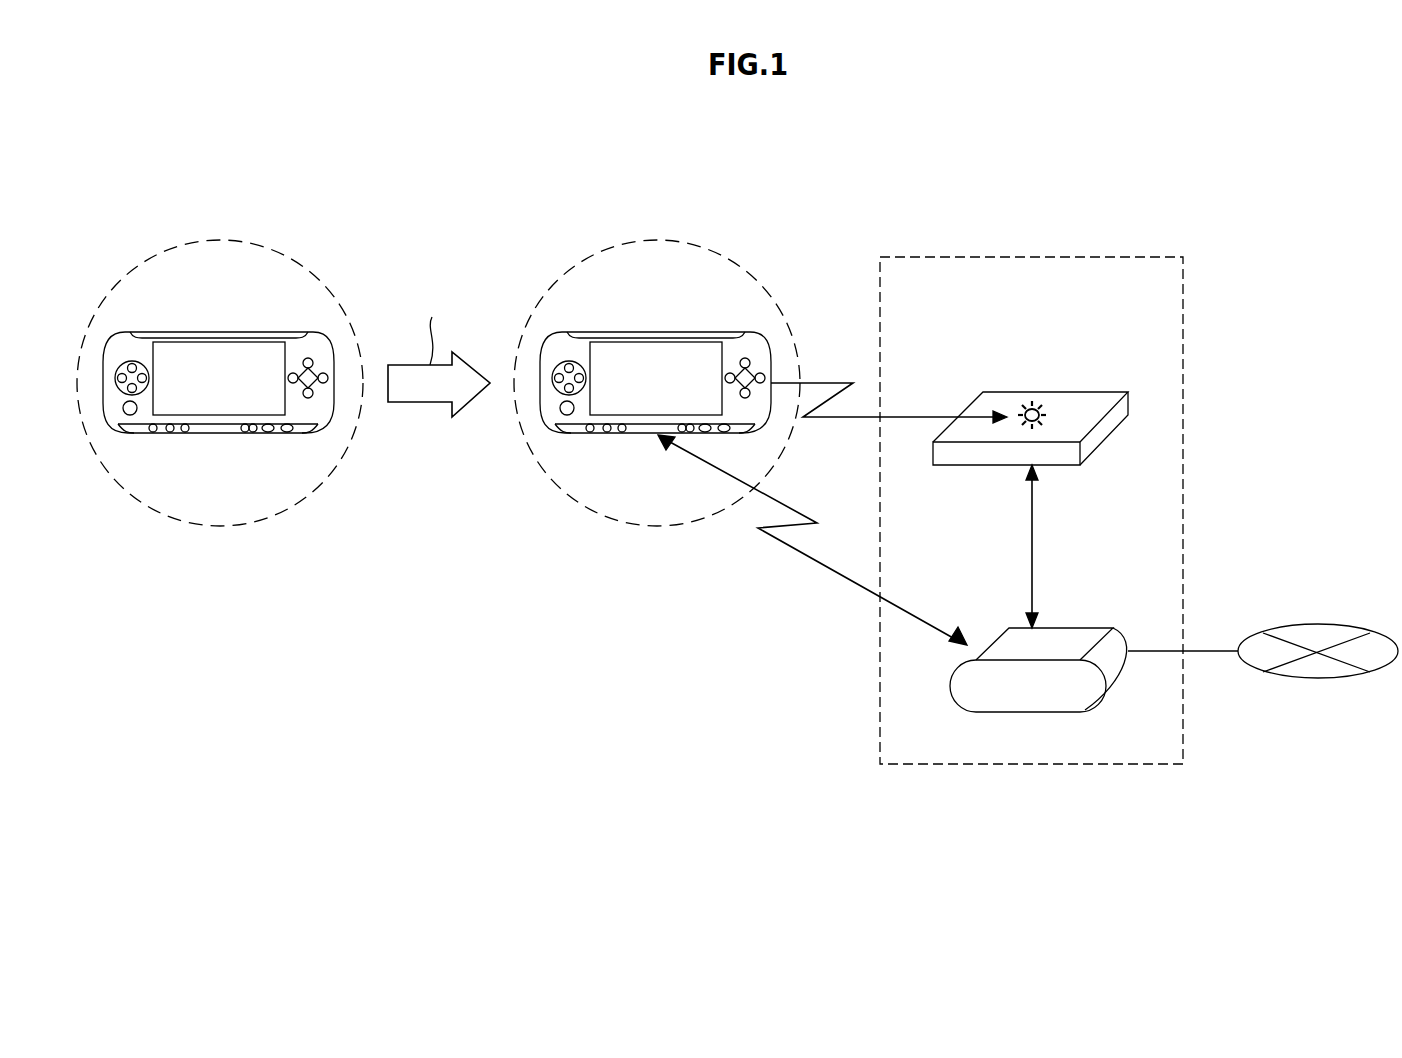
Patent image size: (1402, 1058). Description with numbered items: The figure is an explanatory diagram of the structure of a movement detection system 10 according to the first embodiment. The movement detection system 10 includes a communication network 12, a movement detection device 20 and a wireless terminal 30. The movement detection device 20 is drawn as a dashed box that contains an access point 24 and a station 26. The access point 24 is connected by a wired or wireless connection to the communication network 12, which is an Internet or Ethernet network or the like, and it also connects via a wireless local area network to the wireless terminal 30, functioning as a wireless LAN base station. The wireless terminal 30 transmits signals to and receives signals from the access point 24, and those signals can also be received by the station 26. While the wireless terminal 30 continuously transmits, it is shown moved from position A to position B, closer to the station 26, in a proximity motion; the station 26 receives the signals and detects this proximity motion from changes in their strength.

The movement detection system 10 is at (290, 769).
The communication network 12 is at (1318, 678).
The movement detection device 20 is at (1033, 764).
The access point 24 is at (1078, 628).
The station 26 is at (1078, 392).
The wireless terminal 30 is at (213, 430).